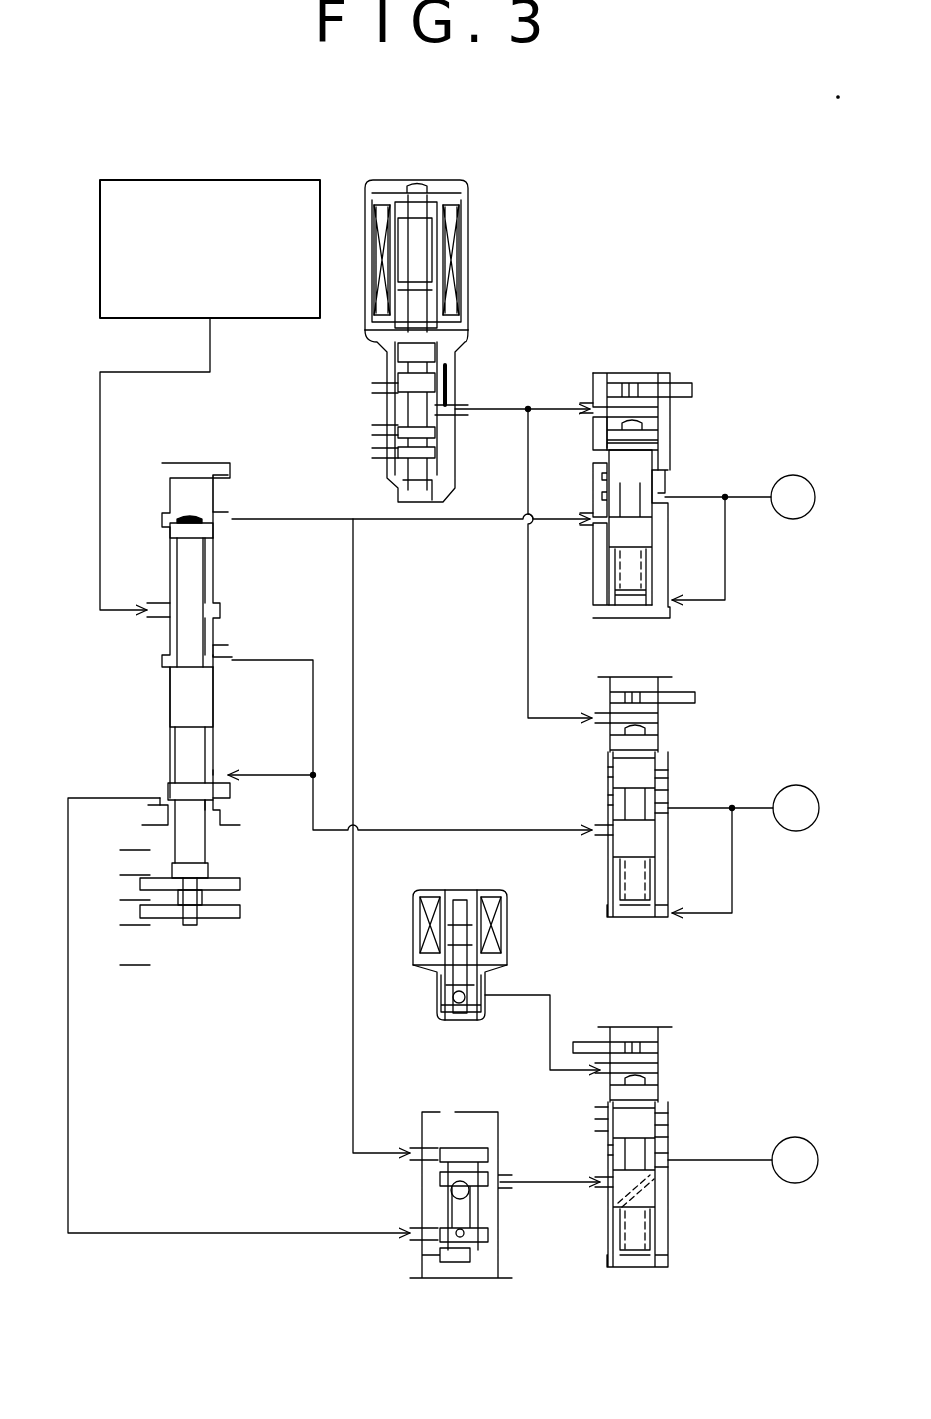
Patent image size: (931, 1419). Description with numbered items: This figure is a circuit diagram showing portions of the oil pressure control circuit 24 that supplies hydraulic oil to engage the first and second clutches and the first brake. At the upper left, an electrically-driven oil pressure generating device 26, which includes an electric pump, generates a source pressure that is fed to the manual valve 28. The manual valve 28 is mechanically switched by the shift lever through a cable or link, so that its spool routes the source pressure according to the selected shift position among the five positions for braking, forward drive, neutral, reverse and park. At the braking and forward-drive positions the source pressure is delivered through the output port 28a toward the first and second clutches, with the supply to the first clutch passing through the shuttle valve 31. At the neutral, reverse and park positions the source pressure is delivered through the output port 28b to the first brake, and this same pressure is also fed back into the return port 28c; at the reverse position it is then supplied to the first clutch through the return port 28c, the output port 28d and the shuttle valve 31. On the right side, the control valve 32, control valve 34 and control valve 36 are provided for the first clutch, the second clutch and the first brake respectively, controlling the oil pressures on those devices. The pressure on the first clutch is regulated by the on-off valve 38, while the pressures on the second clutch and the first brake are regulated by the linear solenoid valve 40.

The oil pressure control circuit 24 is at (684, 233).
The electrically-driven oil pressure generating device 26 is at (266, 180).
The manual valve 28 is at (222, 459).
The output port 28a is at (220, 522).
The output port 28b is at (220, 662).
The return port 28c is at (217, 774).
The output port 28d is at (155, 796).
The shuttle valve 31 is at (452, 1108).
The control valve 32 is at (697, 1062).
The control valve 34 is at (700, 366).
The control valve 36 is at (697, 677).
The on-off valve 38 is at (457, 888).
The linear solenoid valve 40 is at (512, 238).